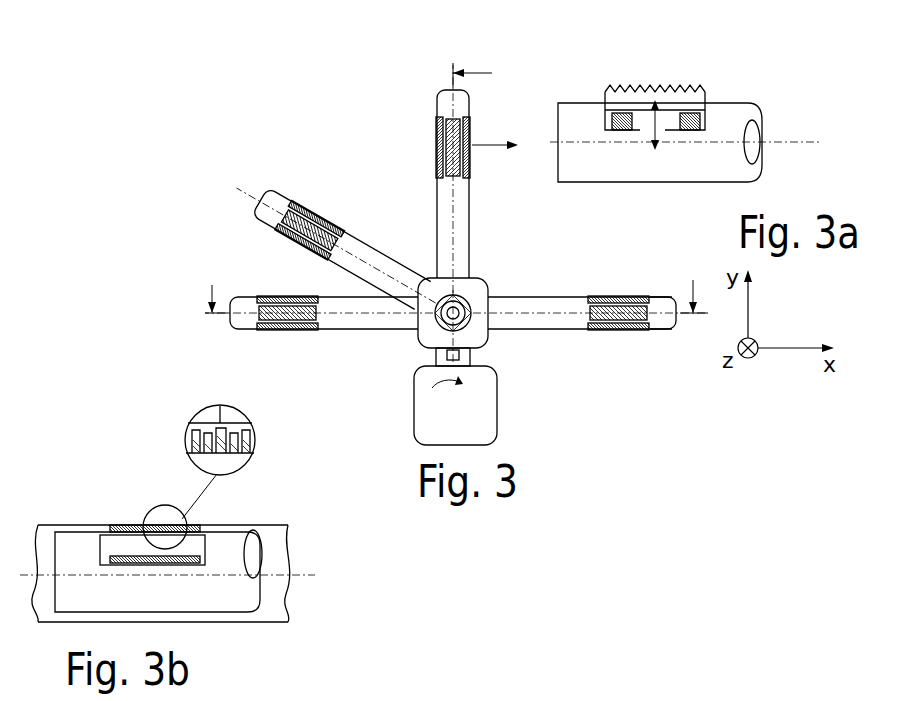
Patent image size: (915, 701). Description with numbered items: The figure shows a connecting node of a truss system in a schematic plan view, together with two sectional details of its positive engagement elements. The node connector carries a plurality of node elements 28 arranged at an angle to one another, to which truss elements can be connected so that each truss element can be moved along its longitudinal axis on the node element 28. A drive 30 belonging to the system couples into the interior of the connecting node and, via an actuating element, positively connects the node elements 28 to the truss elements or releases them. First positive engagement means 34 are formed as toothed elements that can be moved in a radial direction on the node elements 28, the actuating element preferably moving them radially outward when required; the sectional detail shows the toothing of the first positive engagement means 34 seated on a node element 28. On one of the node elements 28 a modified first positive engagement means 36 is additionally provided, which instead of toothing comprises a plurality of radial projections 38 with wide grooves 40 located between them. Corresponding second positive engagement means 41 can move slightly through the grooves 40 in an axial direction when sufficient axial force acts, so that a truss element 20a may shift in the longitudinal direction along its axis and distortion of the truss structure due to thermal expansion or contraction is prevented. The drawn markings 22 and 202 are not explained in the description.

In FIG. 3B, the truss element 20a is at (234, 412).
In FIG. 3, the tool unit 22 is at (504, 668).
In FIG. 3, the node element 28 is at (383, 252).
In FIG. 3A, the node element 28 is at (733, 103).
In FIG. 3B, the node element 28 is at (85, 525).
In FIG. 3, the drive 30 is at (413, 408).
In FIG. 3, the first positive engagement means 34 is at (471, 127).
In FIG. 3A, the first positive engagement means 34 is at (688, 77).
In FIG. 3B, the modified first positive engagement means 36 is at (198, 528).
In FIG. 3, the radial projection 38 is at (650, 333).
In FIG. 3B, the radial projection 38 is at (256, 453).
In FIG. 3, the groove 40 is at (622, 296).
In FIG. 3B, the groove 40 is at (198, 469).
In FIG. 3B, the second positive engagement means 41 is at (250, 430).
In FIG. 3B, the pipe end 202 is at (266, 622).